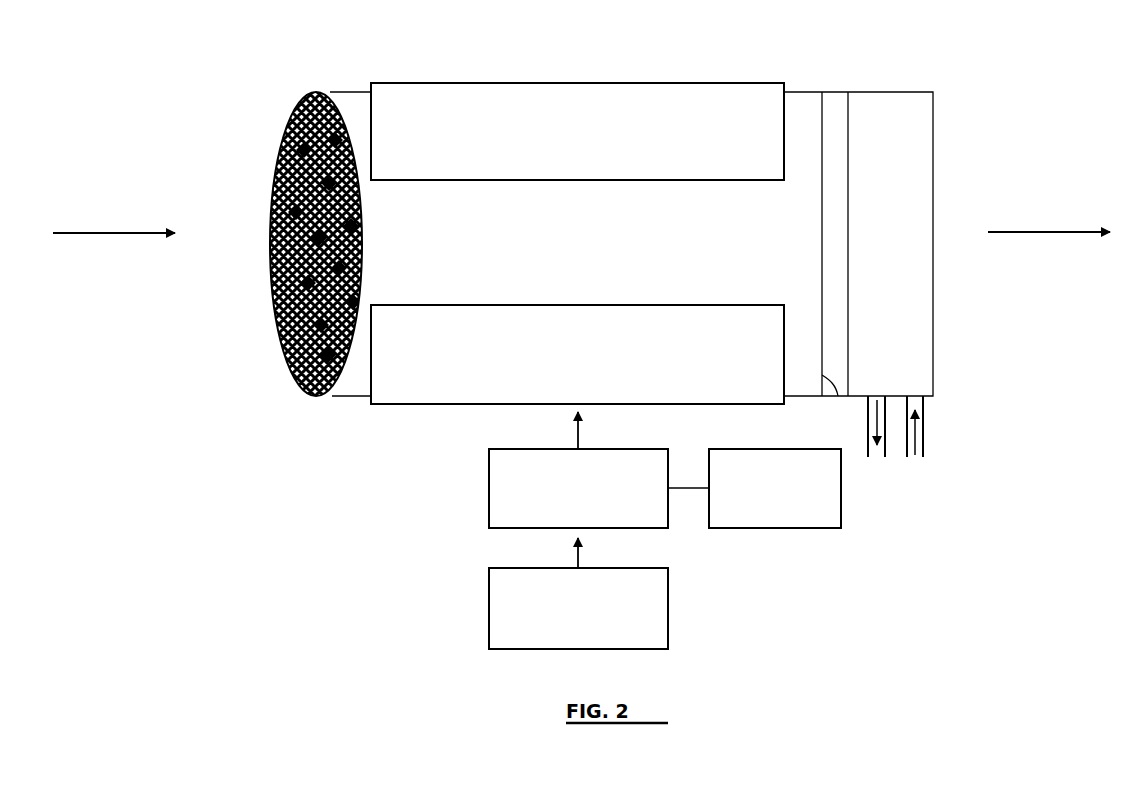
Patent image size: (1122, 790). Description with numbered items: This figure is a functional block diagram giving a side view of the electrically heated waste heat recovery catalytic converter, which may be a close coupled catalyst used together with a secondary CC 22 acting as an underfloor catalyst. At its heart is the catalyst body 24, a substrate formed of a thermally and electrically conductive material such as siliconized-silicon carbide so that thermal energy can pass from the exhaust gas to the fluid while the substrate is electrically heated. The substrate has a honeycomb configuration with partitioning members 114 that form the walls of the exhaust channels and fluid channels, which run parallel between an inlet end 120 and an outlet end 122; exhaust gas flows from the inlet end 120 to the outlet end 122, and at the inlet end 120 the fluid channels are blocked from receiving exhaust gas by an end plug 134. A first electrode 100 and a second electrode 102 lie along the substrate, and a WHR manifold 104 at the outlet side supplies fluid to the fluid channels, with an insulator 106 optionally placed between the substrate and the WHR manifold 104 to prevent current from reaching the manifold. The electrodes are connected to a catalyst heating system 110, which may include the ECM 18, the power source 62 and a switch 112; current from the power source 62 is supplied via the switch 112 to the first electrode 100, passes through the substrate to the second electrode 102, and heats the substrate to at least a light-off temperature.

The secondary catalytic converter 22 is at (985, 106).
The catalyst body 24 is at (287, 215).
The end plug 134 is at (287, 244).
The partitioning members 114 is at (288, 345).
The inlet end 120 is at (364, 243).
The first electrode 100 is at (428, 83).
The second electrode 102 is at (428, 404).
The insulator 106 is at (835, 92).
The WHR manifold 104 is at (892, 92).
The outlet end 122 is at (823, 376).
The switch 112 is at (636, 449).
The engine control module 18 is at (841, 505).
The power source 62 is at (668, 608).
The catalyst heating system 110 is at (776, 593).